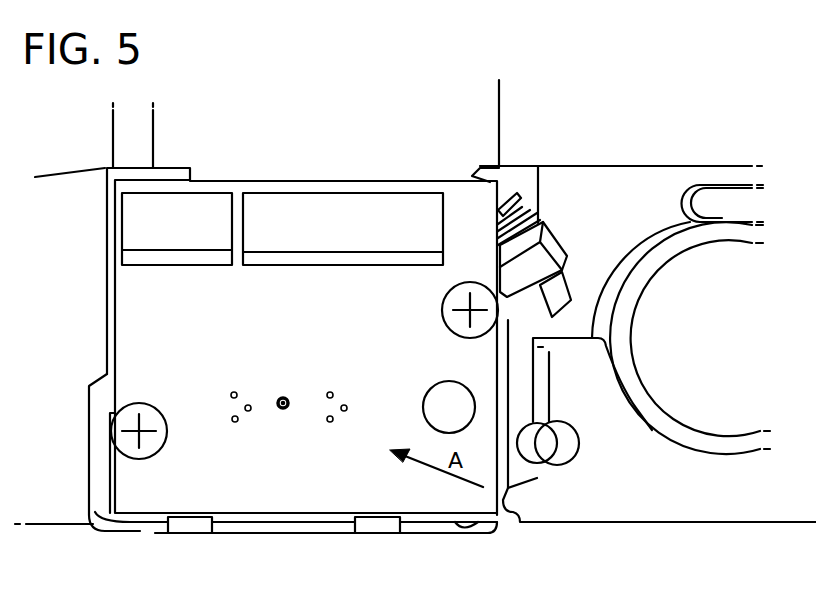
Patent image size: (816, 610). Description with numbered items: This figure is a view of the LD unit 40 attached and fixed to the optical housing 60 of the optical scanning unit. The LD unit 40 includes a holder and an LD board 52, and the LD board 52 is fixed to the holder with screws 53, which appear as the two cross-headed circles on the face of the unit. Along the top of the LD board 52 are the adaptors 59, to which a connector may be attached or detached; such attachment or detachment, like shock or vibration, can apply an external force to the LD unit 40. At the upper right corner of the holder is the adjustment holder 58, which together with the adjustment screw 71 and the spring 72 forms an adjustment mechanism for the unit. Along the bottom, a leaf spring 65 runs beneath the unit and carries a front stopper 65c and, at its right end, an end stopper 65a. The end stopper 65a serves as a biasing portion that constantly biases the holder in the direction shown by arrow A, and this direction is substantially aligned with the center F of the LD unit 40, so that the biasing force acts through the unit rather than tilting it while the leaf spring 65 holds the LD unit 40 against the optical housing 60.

The LD unit 40 is at (88, 313).
The LD board 52 is at (271, 505).
The screw 53 is at (148, 403).
The adjustment holder 58 is at (558, 242).
The adaptor 59 is at (268, 205).
The optical housing 60 is at (58, 512).
The leaf spring 65 is at (318, 535).
The end stopper 65a is at (515, 510).
The front stopper 65c is at (192, 536).
The adjustment screw 71 is at (556, 320).
The spring 72 is at (512, 192).
The center F is at (286, 396).